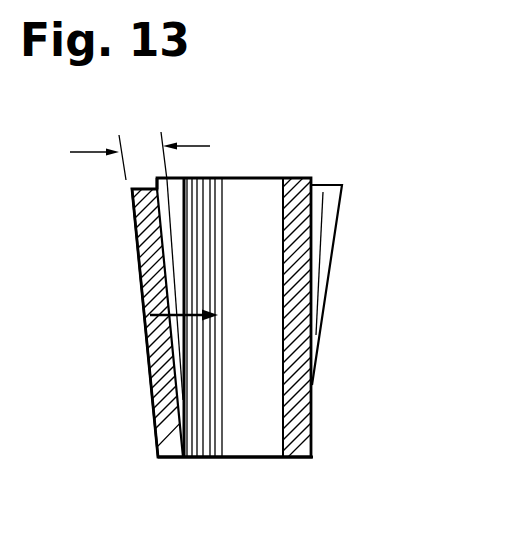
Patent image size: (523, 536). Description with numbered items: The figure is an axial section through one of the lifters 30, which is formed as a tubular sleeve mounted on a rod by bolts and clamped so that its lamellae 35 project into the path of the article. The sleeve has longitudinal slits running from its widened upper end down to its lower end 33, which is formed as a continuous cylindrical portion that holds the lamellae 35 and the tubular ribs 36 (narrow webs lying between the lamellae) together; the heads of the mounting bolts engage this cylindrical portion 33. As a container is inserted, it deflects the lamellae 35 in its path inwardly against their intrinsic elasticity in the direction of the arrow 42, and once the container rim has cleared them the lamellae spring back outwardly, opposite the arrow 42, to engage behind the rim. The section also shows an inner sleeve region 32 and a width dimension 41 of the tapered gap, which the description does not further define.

The lifter 30 is at (126, 371).
The inner sleeve 32 is at (200, 252).
The lower end 33 is at (157, 444).
The lamellae 35 is at (147, 253).
The tubular ribs 36 is at (130, 196).
The slot width 41 is at (141, 148).
The arrow 42 is at (199, 329).